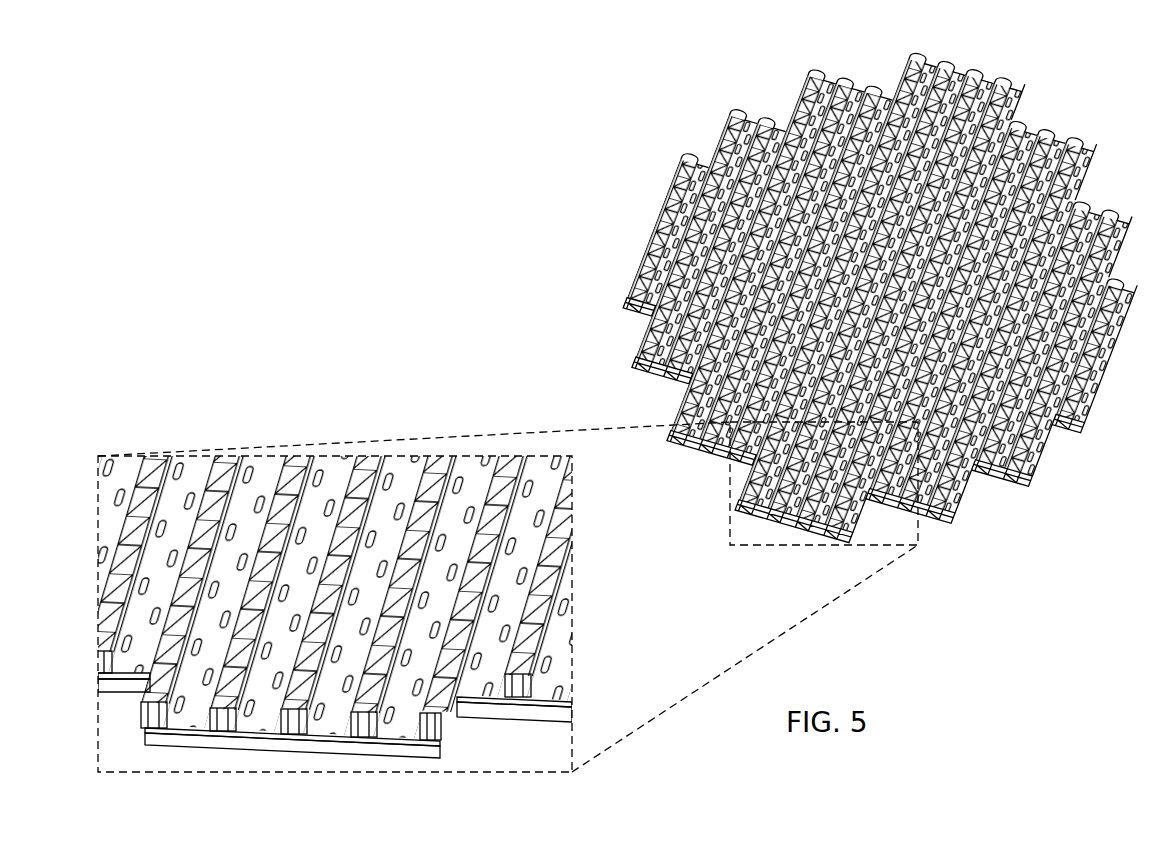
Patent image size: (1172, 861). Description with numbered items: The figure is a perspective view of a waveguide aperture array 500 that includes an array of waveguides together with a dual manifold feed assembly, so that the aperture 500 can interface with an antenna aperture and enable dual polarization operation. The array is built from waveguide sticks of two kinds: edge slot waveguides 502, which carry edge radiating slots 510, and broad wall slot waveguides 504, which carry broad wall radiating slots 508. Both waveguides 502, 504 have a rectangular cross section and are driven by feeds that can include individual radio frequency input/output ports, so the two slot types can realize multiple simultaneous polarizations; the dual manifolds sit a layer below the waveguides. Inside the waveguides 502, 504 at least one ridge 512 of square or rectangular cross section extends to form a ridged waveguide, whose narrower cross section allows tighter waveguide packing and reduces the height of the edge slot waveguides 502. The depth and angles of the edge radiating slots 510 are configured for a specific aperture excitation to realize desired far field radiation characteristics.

The waveguide aperture array 500 is at (618, 204).
The edge slot waveguide 502 is at (228, 744).
The broad wall slot waveguide 504 is at (311, 753).
The broad wall radiating slots 508 is at (259, 466).
The edge radiating slots 510 is at (299, 466).
The ridge 512 is at (148, 742).